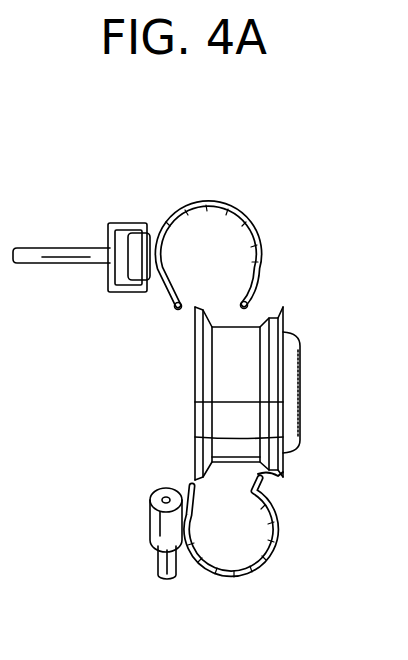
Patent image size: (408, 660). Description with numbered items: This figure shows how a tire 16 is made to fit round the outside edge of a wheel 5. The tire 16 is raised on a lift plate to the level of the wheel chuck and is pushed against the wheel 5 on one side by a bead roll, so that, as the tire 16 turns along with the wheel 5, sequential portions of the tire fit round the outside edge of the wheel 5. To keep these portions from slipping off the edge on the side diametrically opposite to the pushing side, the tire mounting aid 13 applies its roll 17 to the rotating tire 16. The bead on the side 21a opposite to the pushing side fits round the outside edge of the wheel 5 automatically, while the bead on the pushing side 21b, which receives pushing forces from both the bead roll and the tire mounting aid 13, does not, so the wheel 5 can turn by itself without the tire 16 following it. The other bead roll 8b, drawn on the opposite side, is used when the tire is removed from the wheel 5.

The tire mounting aid 13 is at (85, 232).
The roll 17 is at (168, 225).
The bead side of the tire 21a is at (250, 301).
The pushing side of the tire 21b is at (174, 309).
The wheel 5 is at (298, 418).
The tire 16 is at (278, 548).
The other bead roll 8b is at (156, 530).